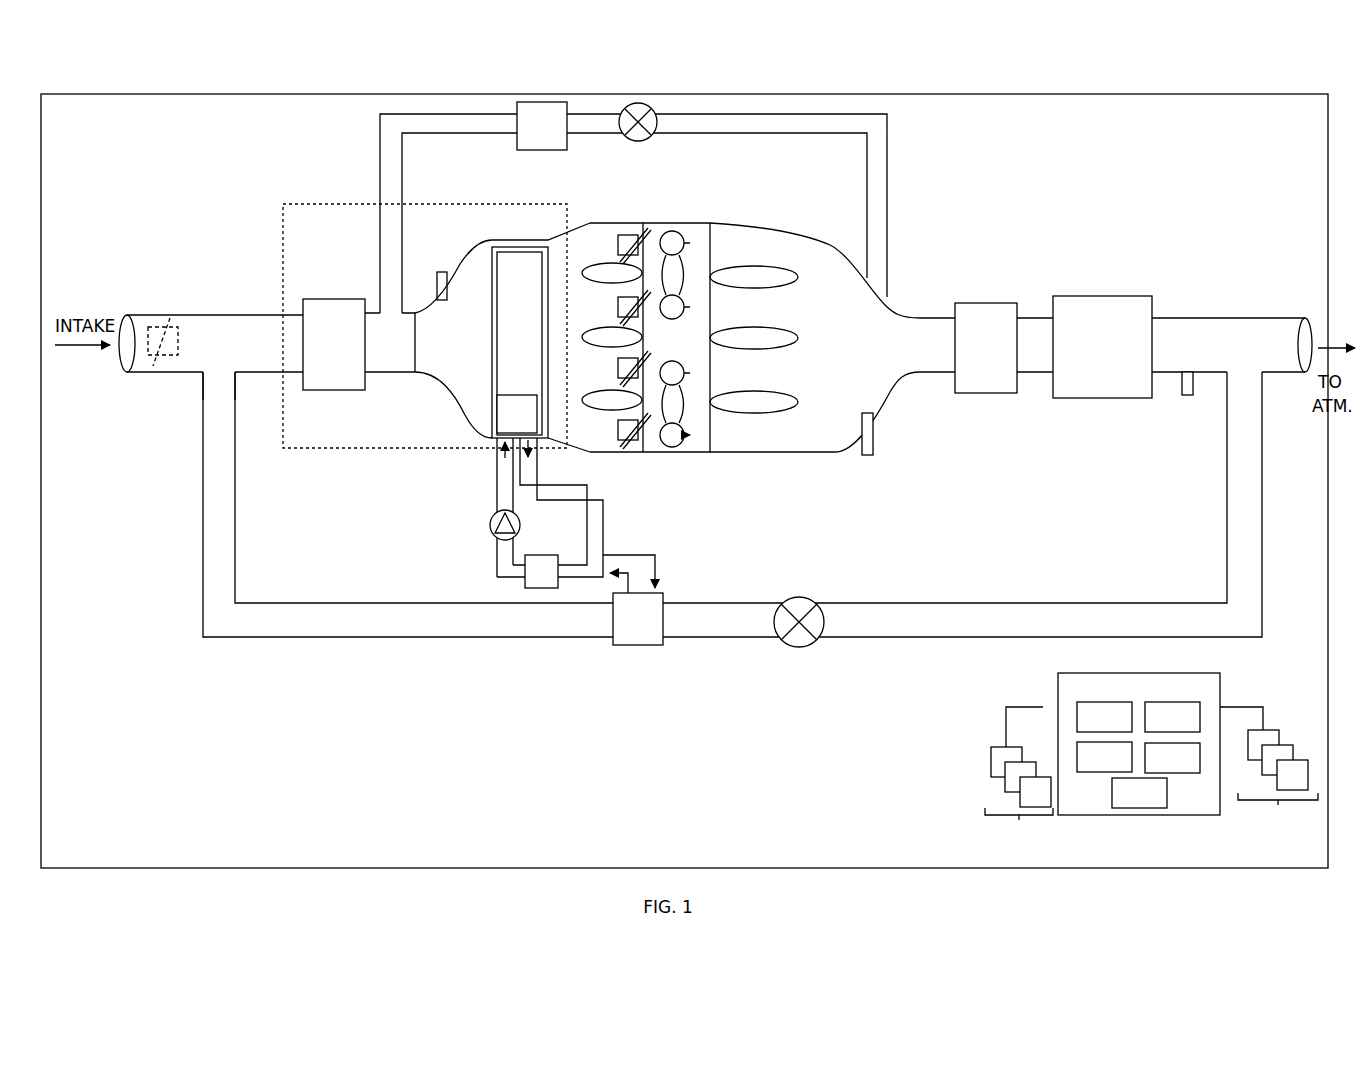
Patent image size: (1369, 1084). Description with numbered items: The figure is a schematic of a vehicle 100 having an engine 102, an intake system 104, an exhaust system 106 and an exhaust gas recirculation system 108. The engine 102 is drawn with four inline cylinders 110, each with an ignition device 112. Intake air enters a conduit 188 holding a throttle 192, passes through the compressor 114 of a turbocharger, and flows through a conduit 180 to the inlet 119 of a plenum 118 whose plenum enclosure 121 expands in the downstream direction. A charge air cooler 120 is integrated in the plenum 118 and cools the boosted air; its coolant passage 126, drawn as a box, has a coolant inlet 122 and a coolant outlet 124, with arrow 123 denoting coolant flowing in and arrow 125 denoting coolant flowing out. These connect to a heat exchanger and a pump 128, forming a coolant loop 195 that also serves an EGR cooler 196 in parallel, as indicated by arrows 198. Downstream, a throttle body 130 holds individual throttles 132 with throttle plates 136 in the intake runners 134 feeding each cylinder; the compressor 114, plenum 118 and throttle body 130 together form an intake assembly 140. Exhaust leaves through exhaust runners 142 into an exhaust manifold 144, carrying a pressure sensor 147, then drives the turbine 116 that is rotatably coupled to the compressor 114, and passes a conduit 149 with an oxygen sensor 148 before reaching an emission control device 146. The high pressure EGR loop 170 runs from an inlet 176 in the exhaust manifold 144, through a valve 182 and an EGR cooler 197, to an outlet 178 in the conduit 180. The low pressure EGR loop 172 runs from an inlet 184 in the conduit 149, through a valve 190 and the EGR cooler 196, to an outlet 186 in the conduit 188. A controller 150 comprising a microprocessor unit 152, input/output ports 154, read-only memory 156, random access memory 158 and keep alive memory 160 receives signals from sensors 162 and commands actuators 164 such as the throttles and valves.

The vehicle 100 is at (78, 94).
The engine 102 is at (660, 228).
The intake system 104 is at (237, 240).
The exhaust system 106 is at (1110, 206).
The exhaust gas recirculation (EGR) system 108 is at (352, 132).
The cylinders 110 is at (665, 339).
The ignition device 112 is at (684, 339).
The compressor 114 is at (320, 354).
The turbine 116 is at (972, 357).
The plenum 118 is at (503, 227).
The inlet 119 is at (388, 324).
The charge air cooler 120 is at (502, 349).
The plenum enclosure 121 is at (438, 356).
The coolant inlet 122 is at (497, 470).
The arrow 123 is at (498, 453).
The coolant outlet 124 is at (537, 485).
The arrow 125 is at (536, 450).
The coolant passage 126 is at (517, 395).
The pump 128 is at (492, 530).
The throttle body 130 is at (592, 223).
The throttles 132 is at (643, 234).
The intake runners 134 is at (581, 253).
The throttle plate 136 is at (630, 236).
The intake assembly 140 is at (335, 204).
The exhaust runners 142 is at (728, 256).
The exhaust manifold 144 is at (838, 361).
The emission control device 146 is at (1089, 357).
The pressure sensor 147 is at (874, 430).
The oxygen sensor 148 is at (1182, 385).
The conduit 149 is at (1230, 318).
The controller 150 is at (1125, 696).
The microprocessor unit 152 is at (1090, 726).
The input/output ports 154 is at (1090, 766).
The read-only memory 156 is at (1158, 726).
The random access memory 158 is at (1158, 767).
The keep alive memory 160 is at (1125, 802).
The sensors 162 is at (1019, 783).
The actuators 164 is at (1269, 778).
The high pressure EGR loop 170 is at (887, 145).
The low pressure EGR loop 172 is at (973, 603).
The inlet 176 is at (878, 310).
The outlet 178 is at (414, 358).
The conduit 180 is at (387, 376).
The valve 182 is at (643, 140).
The inlet 184 is at (1247, 368).
The outlet 186 is at (214, 368).
The conduit 188 is at (255, 315).
The valve 190 is at (804, 598).
The throttle 192 is at (168, 325).
The coolant loop 195 is at (645, 499).
The EGR cooler 196 is at (624, 629).
The EGR cooler 197 is at (528, 133).
The arrows 198 is at (620, 556).